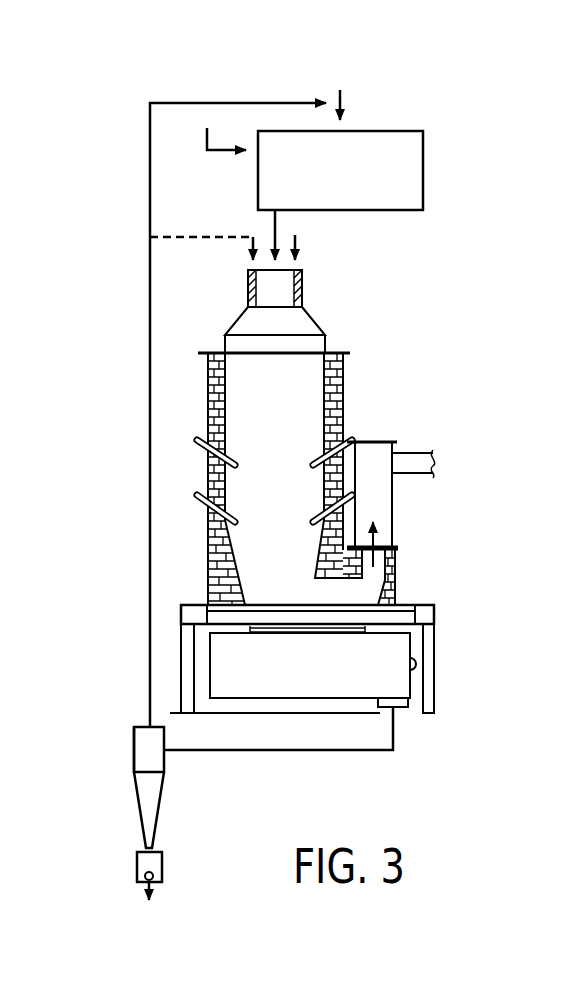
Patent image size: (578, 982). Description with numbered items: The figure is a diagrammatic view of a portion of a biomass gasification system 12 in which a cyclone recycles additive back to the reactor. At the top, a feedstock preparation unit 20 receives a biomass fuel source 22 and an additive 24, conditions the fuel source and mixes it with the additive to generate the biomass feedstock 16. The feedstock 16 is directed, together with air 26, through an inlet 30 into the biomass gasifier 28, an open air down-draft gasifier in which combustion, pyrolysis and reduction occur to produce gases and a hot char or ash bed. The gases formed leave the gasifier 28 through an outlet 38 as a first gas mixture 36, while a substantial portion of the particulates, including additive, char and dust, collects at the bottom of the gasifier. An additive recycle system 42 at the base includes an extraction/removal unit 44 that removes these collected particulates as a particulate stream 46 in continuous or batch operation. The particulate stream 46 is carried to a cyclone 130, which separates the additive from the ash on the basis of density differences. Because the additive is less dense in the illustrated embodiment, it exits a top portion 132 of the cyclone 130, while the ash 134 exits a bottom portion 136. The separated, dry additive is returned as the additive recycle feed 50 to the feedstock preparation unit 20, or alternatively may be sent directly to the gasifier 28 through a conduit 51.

The gasification system 12 is at (490, 108).
The biomass feedstock 16 is at (274, 238).
The feedstock preparation unit 20 is at (408, 131).
The biomass fuel source 22 is at (208, 131).
The additive 24 is at (342, 93).
The air 26 is at (295, 242).
The biomass gasifier 28 is at (402, 285).
The inlet 30 is at (302, 285).
The first gas mixture 36 is at (375, 535).
The outlet 38 is at (412, 453).
The additive recycle system 42 is at (464, 802).
The extraction/removal unit 44 is at (307, 698).
The particulate stream 46 is at (393, 728).
The additive recycle feed 50 is at (150, 325).
The conduit 51 is at (205, 237).
The cyclone 130 is at (160, 808).
The top portion 132 is at (131, 740).
The ash 134 is at (153, 890).
The bottom portion 136 is at (133, 860).